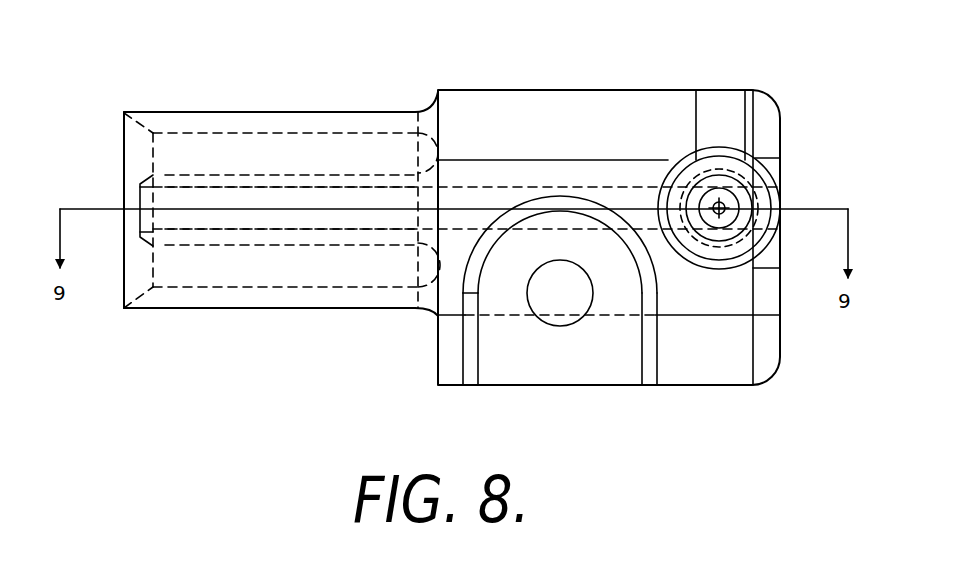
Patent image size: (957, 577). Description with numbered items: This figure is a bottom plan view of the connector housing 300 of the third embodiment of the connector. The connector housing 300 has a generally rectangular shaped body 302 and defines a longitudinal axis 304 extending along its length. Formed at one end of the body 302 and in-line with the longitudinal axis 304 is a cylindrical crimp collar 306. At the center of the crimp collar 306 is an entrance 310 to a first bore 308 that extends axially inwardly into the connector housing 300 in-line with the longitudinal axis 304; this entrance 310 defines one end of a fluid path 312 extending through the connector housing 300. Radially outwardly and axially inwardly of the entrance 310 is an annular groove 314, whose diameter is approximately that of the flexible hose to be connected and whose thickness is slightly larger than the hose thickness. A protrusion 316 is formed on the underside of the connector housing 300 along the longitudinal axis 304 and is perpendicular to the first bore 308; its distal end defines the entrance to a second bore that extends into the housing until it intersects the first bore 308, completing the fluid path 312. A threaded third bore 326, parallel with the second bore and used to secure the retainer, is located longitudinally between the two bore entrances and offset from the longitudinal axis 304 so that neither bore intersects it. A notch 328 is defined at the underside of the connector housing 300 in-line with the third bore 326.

The connector housing 300 is at (636, 48).
The body 302 is at (652, 89).
The longitudinal axis 304 is at (802, 208).
The cylindrical crimp collar 306 is at (268, 112).
The first bore 308 is at (310, 200).
The entrance 310 is at (140, 195).
The fluid path 312 is at (393, 218).
The annular groove 314 is at (250, 265).
The protrusion 316 is at (778, 160).
The threaded third bore 326 is at (557, 317).
The notch 328 is at (610, 355).